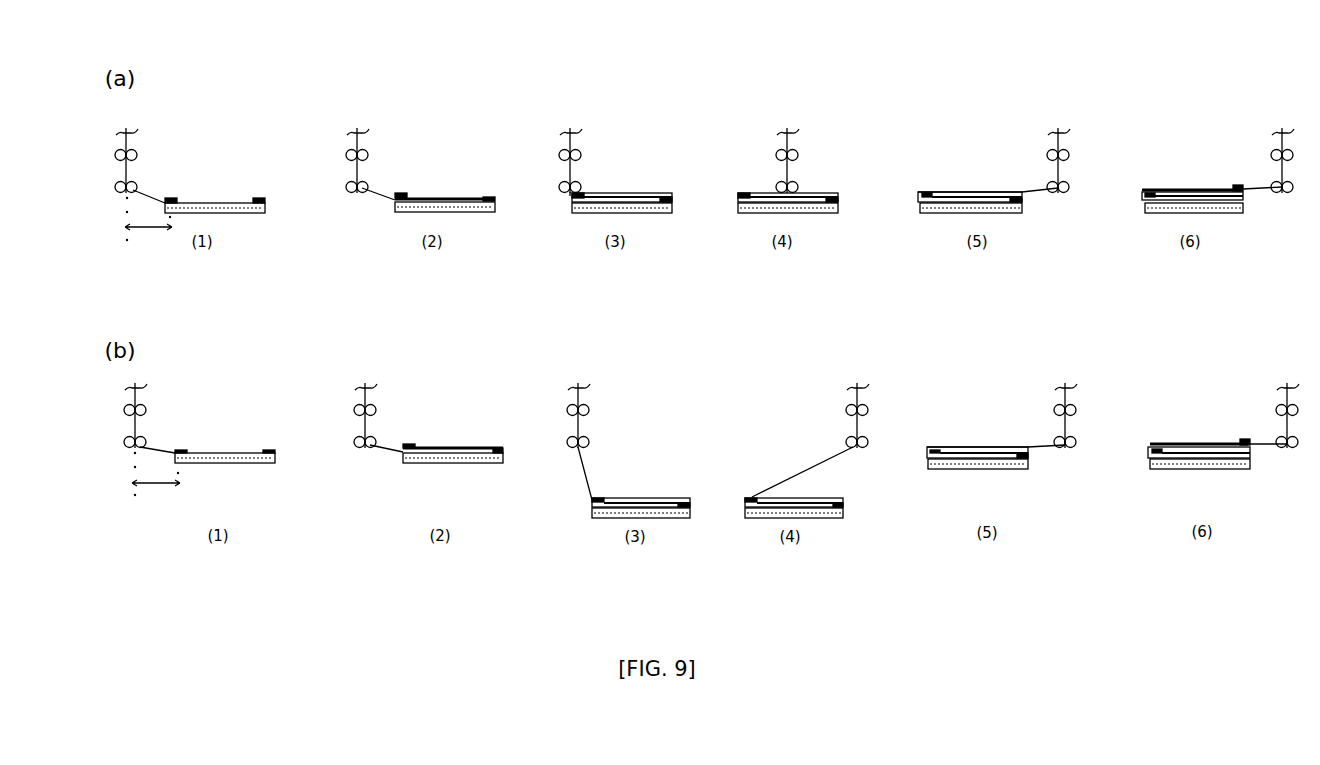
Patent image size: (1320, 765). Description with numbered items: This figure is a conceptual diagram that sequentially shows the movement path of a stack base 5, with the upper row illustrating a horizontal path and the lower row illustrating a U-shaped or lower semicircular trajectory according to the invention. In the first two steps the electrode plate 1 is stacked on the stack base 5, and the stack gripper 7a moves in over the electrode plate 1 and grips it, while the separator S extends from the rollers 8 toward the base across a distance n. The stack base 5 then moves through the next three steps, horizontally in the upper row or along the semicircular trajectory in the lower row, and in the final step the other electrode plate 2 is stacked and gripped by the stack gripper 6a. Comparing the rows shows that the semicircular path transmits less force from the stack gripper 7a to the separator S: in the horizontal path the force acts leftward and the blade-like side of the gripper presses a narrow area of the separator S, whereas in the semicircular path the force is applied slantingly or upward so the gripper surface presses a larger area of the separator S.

The electrode plate 1 is at (457, 198).
The other electrode plate 2 is at (1157, 188).
The stack base 5 is at (238, 212).
The stack gripper 6a is at (255, 198).
The stack gripper 7a is at (173, 198).
The pair of conveying rollers 8 is at (138, 150).
The separator S is at (152, 200).
The distance n is at (152, 350).